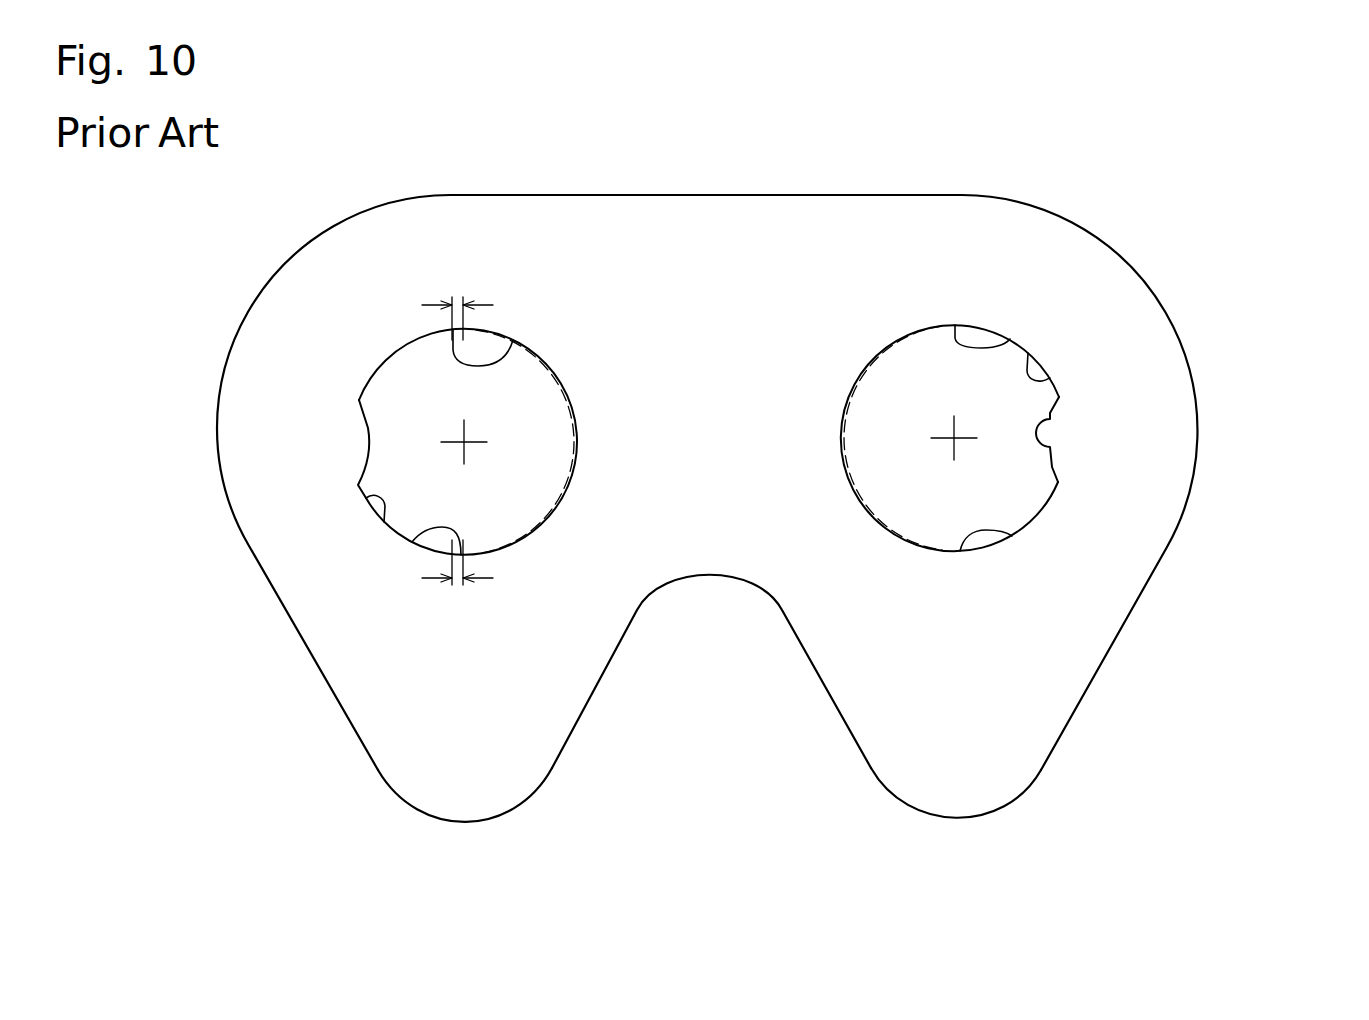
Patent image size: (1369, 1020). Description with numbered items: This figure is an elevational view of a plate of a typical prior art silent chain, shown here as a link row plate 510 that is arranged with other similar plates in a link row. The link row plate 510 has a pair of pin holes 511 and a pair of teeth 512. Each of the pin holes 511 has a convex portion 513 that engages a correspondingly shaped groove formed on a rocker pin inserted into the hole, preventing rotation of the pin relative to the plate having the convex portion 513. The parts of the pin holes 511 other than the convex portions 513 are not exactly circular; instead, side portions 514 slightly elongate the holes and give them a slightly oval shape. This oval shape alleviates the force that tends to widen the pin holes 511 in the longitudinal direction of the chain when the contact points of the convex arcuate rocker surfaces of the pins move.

The link row plate 510 is at (783, 150).
The pin holes 511 is at (363, 497).
The teeth 512 is at (463, 783).
The convex portions 513 is at (368, 428).
The side portions 514 is at (510, 346).